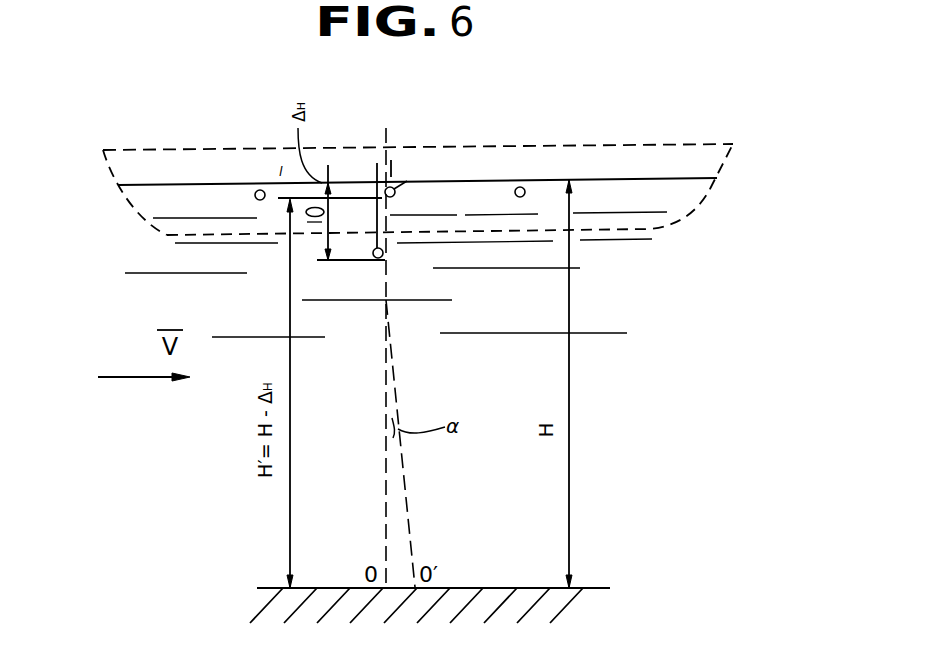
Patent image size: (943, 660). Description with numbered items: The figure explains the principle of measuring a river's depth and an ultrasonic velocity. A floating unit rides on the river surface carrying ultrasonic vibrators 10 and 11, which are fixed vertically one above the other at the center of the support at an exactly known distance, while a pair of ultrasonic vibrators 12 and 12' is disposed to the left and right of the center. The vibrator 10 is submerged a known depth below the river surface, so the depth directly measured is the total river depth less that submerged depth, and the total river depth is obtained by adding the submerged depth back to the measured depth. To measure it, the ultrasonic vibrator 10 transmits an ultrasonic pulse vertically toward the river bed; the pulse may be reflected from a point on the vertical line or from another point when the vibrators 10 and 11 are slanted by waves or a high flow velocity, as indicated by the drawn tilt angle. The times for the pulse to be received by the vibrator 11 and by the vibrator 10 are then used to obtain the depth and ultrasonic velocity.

The ultrasonic vibrator 10 is at (396, 189).
The ultrasonic vibrator 11 is at (373, 256).
The ultrasonic vibrator 12 is at (233, 144).
The ultrasonic vibrator 12' is at (552, 143).